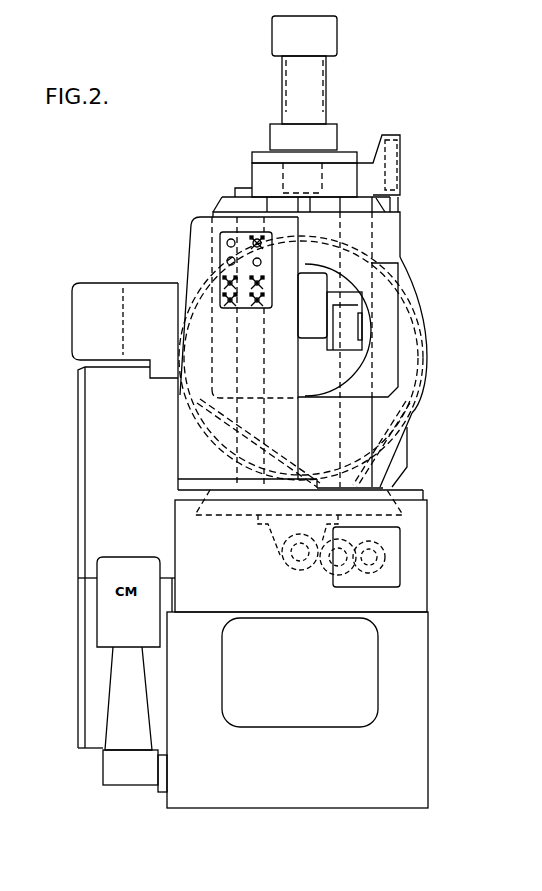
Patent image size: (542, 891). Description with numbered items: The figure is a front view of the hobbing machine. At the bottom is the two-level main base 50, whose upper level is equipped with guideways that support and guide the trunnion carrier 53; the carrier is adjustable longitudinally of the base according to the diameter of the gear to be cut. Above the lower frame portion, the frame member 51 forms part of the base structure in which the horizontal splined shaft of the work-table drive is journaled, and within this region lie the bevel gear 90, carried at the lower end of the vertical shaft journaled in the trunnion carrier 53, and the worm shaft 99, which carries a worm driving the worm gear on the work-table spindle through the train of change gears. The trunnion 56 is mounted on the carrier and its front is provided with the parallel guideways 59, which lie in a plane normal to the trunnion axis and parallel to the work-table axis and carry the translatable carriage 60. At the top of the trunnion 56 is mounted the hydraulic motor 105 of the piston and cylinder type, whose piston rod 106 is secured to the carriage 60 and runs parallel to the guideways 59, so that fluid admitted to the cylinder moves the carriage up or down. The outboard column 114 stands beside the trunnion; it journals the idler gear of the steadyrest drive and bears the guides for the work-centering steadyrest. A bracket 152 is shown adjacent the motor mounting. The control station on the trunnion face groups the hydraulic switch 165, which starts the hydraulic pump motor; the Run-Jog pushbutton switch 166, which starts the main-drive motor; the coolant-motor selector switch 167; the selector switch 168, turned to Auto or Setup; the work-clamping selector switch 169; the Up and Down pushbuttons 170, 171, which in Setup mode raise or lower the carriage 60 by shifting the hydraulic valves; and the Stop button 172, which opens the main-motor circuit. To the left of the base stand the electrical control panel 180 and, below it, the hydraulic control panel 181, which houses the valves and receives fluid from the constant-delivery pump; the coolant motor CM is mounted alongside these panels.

The two-level main base 50 is at (418, 672).
The frame member 51 is at (420, 553).
The trunnion carrier 53 is at (407, 467).
The trunnion 56 is at (408, 332).
The parallel guideways 59 is at (363, 428).
The translatable carriage 60 is at (395, 362).
The bevel gear 90 is at (298, 553).
The worm shaft 99 is at (370, 558).
The hydraulic motor 105 is at (315, 92).
The piston rod 106 is at (313, 202).
The outboard column 114 is at (288, 436).
The bracket 152 is at (402, 155).
The hydraulic switch 165 is at (226, 280).
The Run-Jog pushbutton switch 166 is at (262, 242).
The coolant-motor selector switch 167 is at (263, 284).
The selector switch 168 is at (226, 298).
The work-clamping selector switch 169 is at (263, 302).
The Up pushbutton 170 is at (227, 241).
The Down pushbutton 171 is at (227, 259).
The Stop button 172 is at (262, 262).
The electrical control panel 180 is at (103, 460).
The hydraulic control panel 181 is at (97, 663).